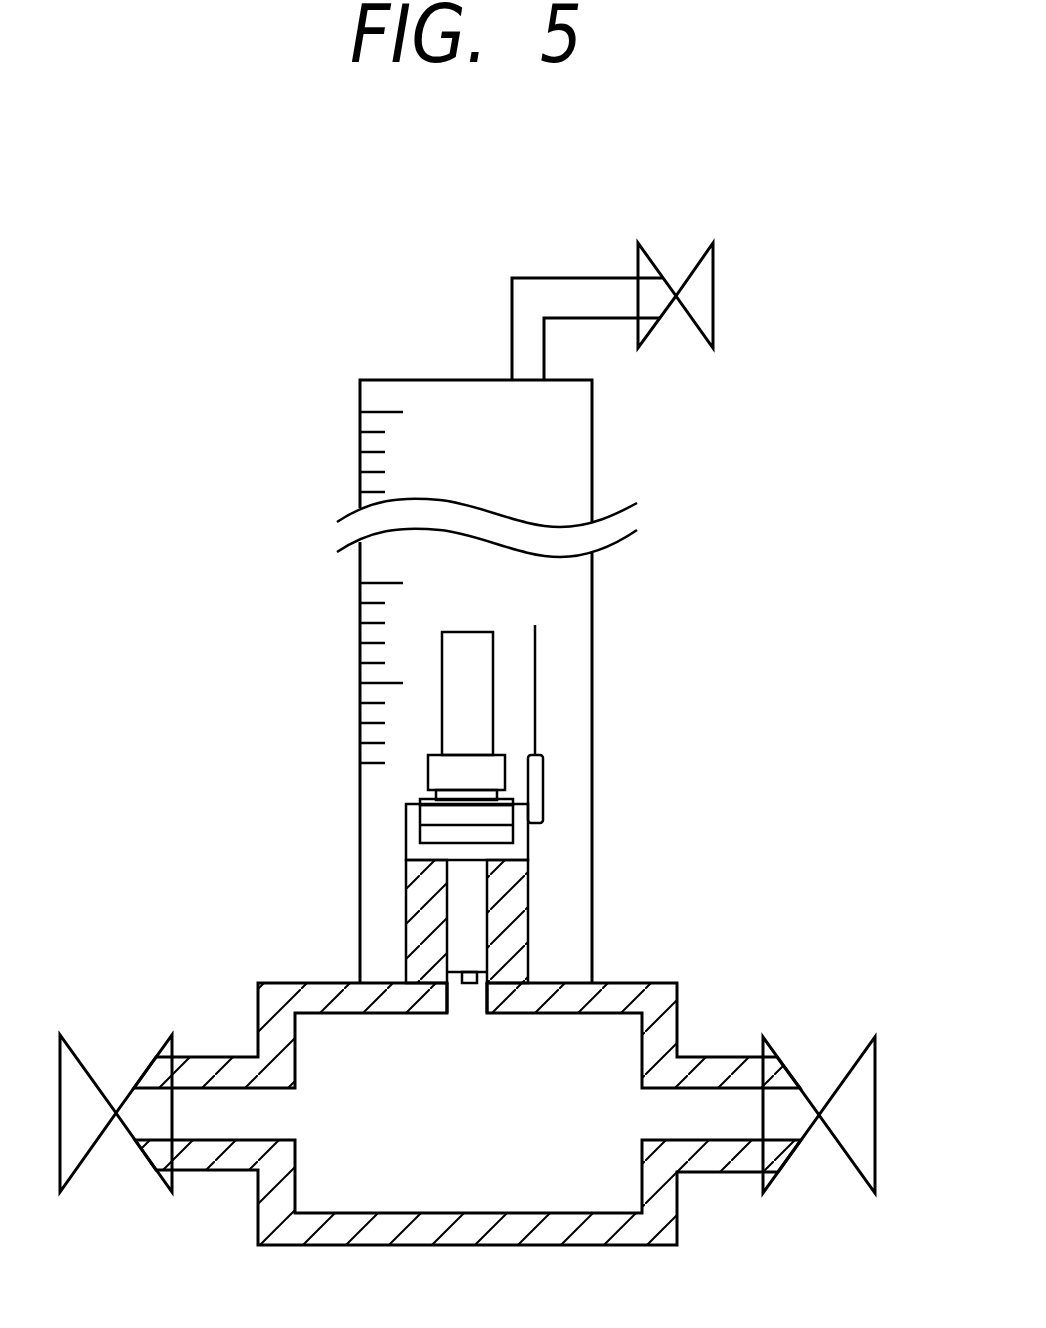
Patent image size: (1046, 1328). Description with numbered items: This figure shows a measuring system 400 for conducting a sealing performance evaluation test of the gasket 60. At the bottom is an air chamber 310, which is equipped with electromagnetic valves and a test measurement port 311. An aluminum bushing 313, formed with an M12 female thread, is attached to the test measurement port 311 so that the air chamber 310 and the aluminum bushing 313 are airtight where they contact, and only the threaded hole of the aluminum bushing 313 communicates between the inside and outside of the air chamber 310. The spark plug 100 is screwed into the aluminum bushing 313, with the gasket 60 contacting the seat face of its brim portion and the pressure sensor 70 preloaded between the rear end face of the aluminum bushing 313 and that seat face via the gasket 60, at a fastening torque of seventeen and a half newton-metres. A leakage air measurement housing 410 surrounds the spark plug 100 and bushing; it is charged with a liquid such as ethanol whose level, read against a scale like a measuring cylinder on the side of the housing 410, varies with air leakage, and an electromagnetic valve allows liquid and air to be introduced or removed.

The measuring system 400 is at (143, 310).
The leakage air measurement housing 410 is at (562, 595).
The spark plug 100 is at (417, 672).
The gasket 60 is at (428, 833).
The pressure sensor 70 is at (413, 850).
The aluminum bushing 313 is at (507, 893).
The air chamber 310 is at (297, 1041).
The test measurement port 311 is at (463, 1000).